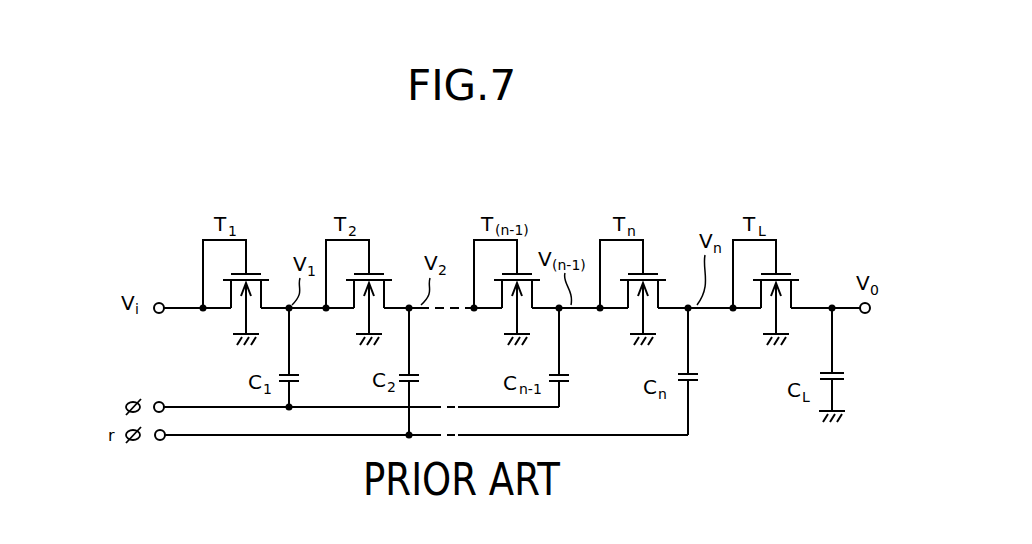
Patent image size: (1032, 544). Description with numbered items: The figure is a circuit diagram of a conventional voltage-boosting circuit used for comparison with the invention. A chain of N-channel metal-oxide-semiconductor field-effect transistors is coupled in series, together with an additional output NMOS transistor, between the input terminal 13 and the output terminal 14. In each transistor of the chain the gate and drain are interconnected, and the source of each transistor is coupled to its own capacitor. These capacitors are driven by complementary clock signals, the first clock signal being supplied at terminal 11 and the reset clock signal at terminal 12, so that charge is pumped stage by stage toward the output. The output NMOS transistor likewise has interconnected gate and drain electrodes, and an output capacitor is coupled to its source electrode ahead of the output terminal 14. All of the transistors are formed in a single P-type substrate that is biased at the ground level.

The clock pulse input terminal (phi) 11 is at (158, 401).
The reset clock pulse input terminal (r-phi) 12 is at (158, 441).
The input terminal 13 is at (158, 301).
The output terminal 14 is at (866, 314).